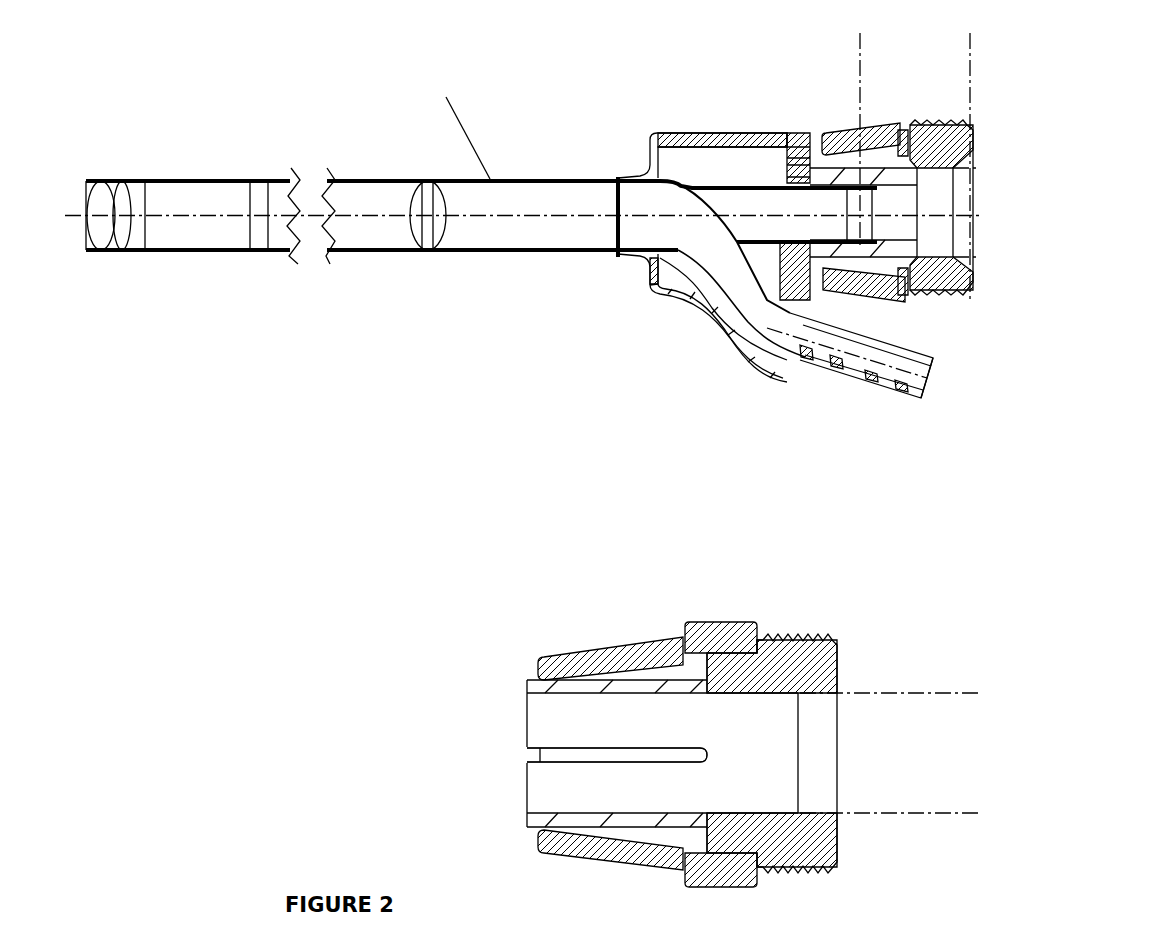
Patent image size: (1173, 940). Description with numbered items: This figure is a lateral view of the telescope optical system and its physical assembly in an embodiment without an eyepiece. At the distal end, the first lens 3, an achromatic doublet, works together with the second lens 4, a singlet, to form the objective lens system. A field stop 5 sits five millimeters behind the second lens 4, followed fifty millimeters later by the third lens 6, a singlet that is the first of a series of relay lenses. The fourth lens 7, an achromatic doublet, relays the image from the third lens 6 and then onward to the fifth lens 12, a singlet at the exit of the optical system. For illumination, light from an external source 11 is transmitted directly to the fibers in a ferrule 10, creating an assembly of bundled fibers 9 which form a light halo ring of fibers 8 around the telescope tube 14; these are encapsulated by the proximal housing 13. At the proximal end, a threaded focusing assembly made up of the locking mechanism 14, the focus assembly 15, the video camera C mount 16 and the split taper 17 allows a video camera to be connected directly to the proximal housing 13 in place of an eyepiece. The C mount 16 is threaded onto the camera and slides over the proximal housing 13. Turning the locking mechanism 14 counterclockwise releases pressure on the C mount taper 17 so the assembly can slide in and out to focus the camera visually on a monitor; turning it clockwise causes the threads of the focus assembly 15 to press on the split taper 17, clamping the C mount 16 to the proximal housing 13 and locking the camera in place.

The Lens #1 3 is at (93, 226).
The Lens #2 4 is at (123, 230).
The field stop 5 is at (146, 251).
The Lens #3 6 is at (256, 252).
The Lens #4 7 is at (418, 238).
The light halo ring of fibers 8 is at (614, 232).
The assembly of bundled fibers 9 is at (767, 322).
The ferrule 10 is at (868, 393).
The external source 11 is at (925, 392).
The Lens #5 12 is at (865, 218).
The proximal housing 13 is at (803, 133).
The locking mechanism 14 is at (873, 133).
The focus assembly 15 is at (918, 140).
The video camera C mount 16 is at (962, 127).
The split taper 17 is at (620, 755).